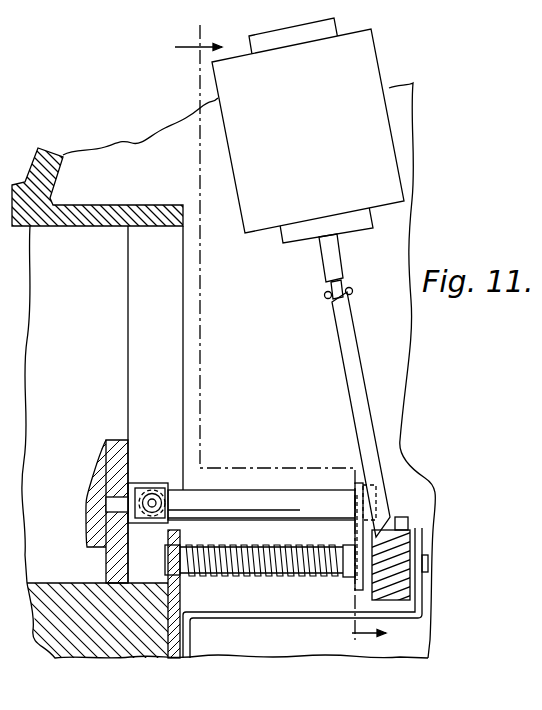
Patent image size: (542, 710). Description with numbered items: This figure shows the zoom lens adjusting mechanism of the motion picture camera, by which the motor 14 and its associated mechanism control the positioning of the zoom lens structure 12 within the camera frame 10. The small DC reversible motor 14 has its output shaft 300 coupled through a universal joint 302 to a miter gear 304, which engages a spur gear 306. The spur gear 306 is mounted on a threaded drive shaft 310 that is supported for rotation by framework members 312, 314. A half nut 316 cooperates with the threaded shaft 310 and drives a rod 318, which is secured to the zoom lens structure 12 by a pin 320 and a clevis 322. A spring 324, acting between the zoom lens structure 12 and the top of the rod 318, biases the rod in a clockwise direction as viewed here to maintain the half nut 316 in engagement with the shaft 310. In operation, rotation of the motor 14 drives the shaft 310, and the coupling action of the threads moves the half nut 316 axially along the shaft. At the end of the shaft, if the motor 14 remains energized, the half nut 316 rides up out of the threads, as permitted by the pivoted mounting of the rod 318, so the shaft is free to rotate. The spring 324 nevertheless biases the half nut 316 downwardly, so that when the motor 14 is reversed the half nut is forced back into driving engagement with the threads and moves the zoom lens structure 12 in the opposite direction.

The frame 10 is at (48, 157).
The zoom lens structure 12 is at (13, 397).
The motor 14 is at (367, 80).
The output shaft 300 is at (325, 265).
The universal joint 302 is at (328, 298).
The miter gear 304 is at (405, 543).
The spur gear 306 is at (397, 527).
The threaded drive shaft 310 is at (271, 578).
The framework member 312 is at (420, 553).
The framework member 314 is at (176, 595).
The half nut 316 is at (357, 495).
The rod 318 is at (256, 491).
The pin 320 is at (150, 500).
The clevis 322 is at (97, 587).
The spring 324 is at (172, 509).